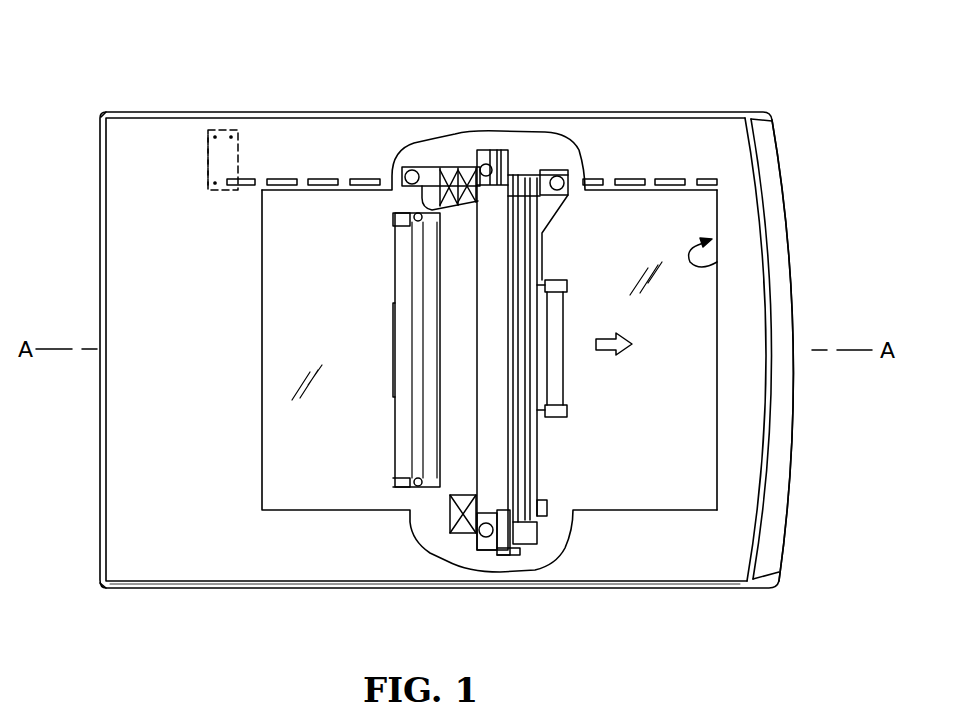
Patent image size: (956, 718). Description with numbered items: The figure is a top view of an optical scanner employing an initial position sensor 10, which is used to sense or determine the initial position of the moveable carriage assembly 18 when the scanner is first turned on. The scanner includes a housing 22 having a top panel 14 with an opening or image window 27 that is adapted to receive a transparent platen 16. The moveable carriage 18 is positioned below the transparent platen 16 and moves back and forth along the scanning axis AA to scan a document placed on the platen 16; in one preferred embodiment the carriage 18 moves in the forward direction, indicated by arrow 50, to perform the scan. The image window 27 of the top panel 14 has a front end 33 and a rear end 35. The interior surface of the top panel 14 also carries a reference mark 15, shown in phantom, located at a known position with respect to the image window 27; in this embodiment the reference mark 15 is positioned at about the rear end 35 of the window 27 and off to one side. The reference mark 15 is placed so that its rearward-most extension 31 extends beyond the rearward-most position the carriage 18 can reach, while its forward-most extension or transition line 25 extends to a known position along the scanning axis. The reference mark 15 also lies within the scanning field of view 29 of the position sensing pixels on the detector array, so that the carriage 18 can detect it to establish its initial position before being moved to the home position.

The initial position sensor 10 is at (113, 58).
The top panel 14 is at (712, 140).
The reference mark 15 is at (208, 171).
The transparent platen 16 is at (717, 317).
The moveable carriage assembly 18 is at (396, 410).
The housing 22 is at (198, 589).
The forward-most extension or transition line 25 is at (240, 146).
The image window 27 is at (717, 262).
The scanning field of view 29 is at (323, 186).
The rearward-most extension 31 is at (207, 146).
The front end 33 is at (717, 424).
The rear end 35 is at (262, 318).
The arrow 50 is at (604, 351).